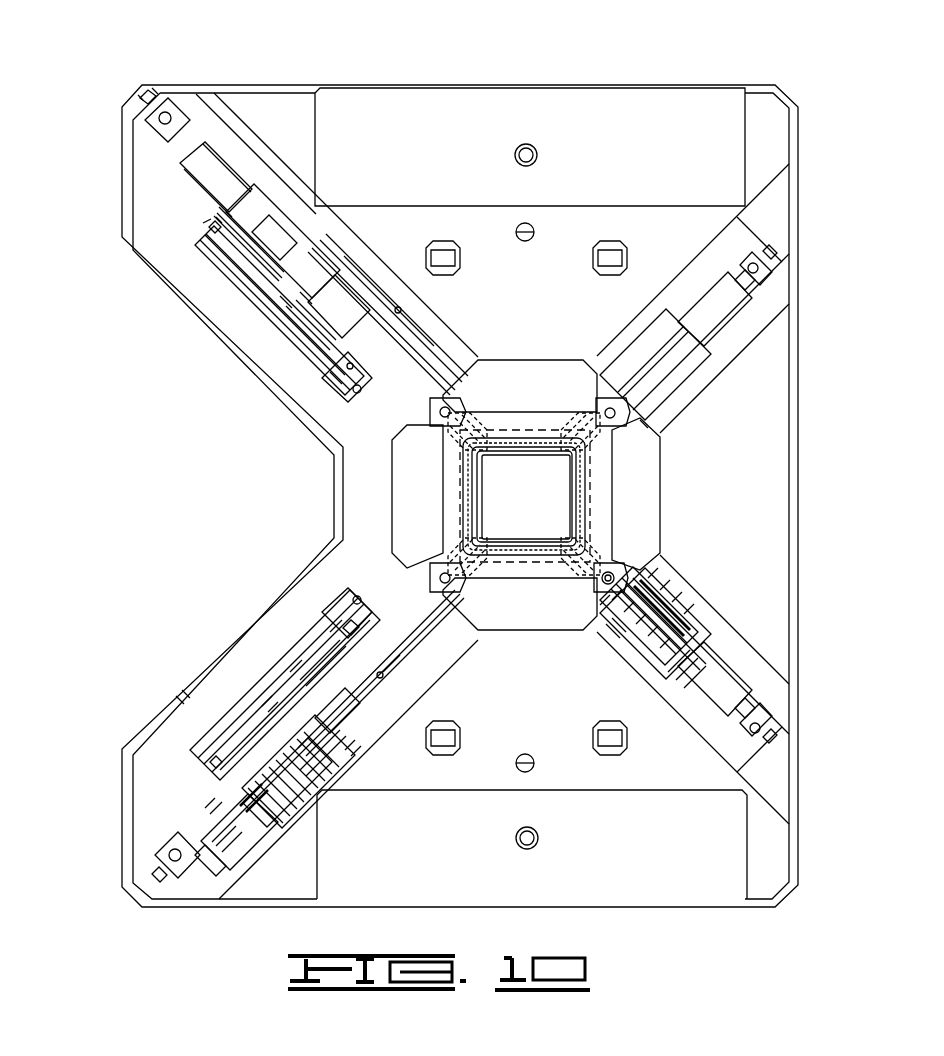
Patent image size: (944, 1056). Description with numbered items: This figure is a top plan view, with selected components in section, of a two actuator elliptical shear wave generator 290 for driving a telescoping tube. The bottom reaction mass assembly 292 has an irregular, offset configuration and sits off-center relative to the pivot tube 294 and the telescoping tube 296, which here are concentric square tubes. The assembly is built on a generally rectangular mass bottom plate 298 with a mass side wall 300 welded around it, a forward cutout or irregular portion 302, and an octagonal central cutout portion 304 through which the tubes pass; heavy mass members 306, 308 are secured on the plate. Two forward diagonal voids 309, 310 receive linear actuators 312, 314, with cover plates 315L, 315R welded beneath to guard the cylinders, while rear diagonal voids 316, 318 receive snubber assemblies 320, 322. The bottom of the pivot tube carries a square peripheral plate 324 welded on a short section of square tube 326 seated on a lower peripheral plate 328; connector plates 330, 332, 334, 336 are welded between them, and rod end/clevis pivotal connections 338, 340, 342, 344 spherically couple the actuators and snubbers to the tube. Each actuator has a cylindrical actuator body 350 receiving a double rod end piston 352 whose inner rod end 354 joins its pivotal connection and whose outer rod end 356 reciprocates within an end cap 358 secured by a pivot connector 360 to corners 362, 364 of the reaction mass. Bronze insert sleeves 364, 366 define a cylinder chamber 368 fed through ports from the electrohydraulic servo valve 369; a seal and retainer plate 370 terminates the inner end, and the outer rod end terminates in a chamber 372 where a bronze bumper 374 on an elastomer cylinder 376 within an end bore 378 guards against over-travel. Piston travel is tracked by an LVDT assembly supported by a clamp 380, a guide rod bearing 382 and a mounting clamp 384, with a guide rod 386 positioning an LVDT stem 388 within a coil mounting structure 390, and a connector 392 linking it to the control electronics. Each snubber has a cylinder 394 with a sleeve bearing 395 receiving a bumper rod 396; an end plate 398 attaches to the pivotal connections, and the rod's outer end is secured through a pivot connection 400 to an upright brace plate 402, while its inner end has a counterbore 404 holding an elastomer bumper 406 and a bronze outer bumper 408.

The two actuator elliptical shear wave generator 290 is at (564, 58).
The bottom reaction mass assembly 292 is at (718, 86).
The pivot tube 294 is at (583, 517).
The telescoping tube 296 is at (572, 533).
The mass bottom plate 298 is at (561, 312).
The mass side wall 300 is at (192, 300).
The forward cutout or irregular portion 302 is at (316, 510).
The octagonal central cutout portion 304 is at (548, 363).
The heavy mass member 306 is at (474, 871).
The heavy mass member 308 is at (624, 157).
The forward diagonal void 309 is at (392, 712).
The forward diagonal void 310 is at (150, 208).
The linear actuator 312 is at (318, 794).
The linear actuator 314 is at (335, 295).
The cover plate 315R is at (145, 160).
The cover plate 315L is at (138, 846).
The diagonal void 316 is at (716, 721).
The diagonal void 318 is at (744, 353).
The snubber assembly 320 is at (637, 677).
The snubber assembly 322 is at (633, 338).
The square peripheral plate 324 is at (598, 480).
The short section of square tube 326 is at (592, 495).
The lower peripheral plate 328 is at (475, 582).
The connector plate 330 is at (440, 525).
The connector plate 332 is at (478, 416).
The connector plate 334 is at (572, 416).
The connector plate 336 is at (600, 549).
The rod end/clevis pivotal connection 338 is at (440, 563).
The rod end/clevis pivotal connection 340 is at (447, 405).
The rod end/clevis pivotal connection 342 is at (612, 400).
The rod end/clevis pivotal connection 344 is at (604, 586).
The cylindrical actuator body 350 is at (352, 292).
The double rod end piston 352 is at (330, 770).
The inner rod end 354 is at (408, 364).
The outer rod end 356 is at (288, 820).
The end cap 358 is at (222, 170).
The rod end/clevis pivot connector 360 is at (178, 123).
The corner of the reaction mass assembly 362 is at (142, 908).
The bronze insert sleeve 364 is at (140, 100).
The bronze insert sleeve 366 is at (190, 690).
The cylinder chamber 368 is at (265, 705).
The electrohydraulic servo valve 369 is at (326, 260).
The seal and retainer plate 370 is at (384, 676).
The chamber 372 is at (215, 810).
The bronze bumper 374 is at (255, 850).
The elastomer cylinder 376 is at (265, 832).
The end bore 378 is at (250, 796).
The clamp 380 is at (358, 393).
The guide rod bearing 382 is at (313, 353).
The mounting clamp 384 is at (243, 263).
The guide rod 386 is at (347, 380).
The LVDT stem 388 is at (294, 314).
The LVDT coil mounting structure 390 is at (285, 300).
The connector 392 is at (212, 228).
The cylinder 394 is at (684, 381).
The self-lubricating liner or sleeve bearing 395 is at (662, 600).
The bumper rod 396 is at (712, 306).
The end plate 398 is at (645, 418).
The rod end/clevis pivot connection 400 is at (765, 270).
The brace plate 402 is at (760, 227).
The counterbore 404 is at (692, 612).
The elastomer bumper 406 is at (660, 686).
The bronze outer bumper 408 is at (615, 640).